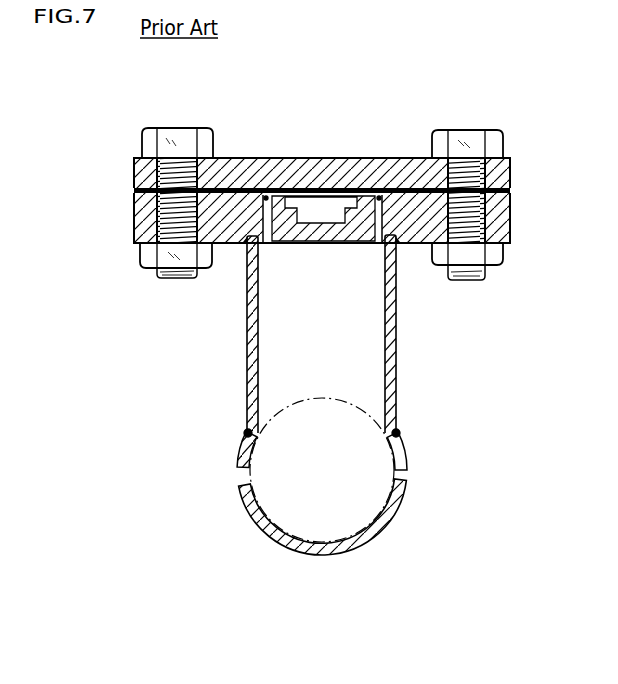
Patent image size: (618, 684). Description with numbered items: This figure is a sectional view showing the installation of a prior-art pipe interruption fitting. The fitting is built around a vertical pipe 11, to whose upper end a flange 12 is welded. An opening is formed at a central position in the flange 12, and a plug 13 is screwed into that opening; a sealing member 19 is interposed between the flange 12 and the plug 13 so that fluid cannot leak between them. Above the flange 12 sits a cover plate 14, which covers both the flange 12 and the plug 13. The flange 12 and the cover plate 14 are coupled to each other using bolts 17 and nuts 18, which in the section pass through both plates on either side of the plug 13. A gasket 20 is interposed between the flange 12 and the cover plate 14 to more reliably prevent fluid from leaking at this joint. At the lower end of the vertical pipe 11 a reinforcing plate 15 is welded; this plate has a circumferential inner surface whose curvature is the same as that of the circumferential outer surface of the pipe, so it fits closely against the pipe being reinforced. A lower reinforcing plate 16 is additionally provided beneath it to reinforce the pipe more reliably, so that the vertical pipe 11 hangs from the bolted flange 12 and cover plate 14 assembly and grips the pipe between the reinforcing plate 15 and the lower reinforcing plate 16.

The vertical pipe 11 is at (253, 385).
The flange 12 is at (147, 213).
The plug 13 is at (367, 190).
The cover plate 14 is at (135, 170).
The reinforcing plate 15 is at (238, 450).
The lower reinforcing plate 16 is at (363, 542).
The bolts 17 is at (178, 137).
The nuts 18 is at (150, 258).
The sealing member 19 is at (412, 160).
The gasket 20 is at (241, 188).